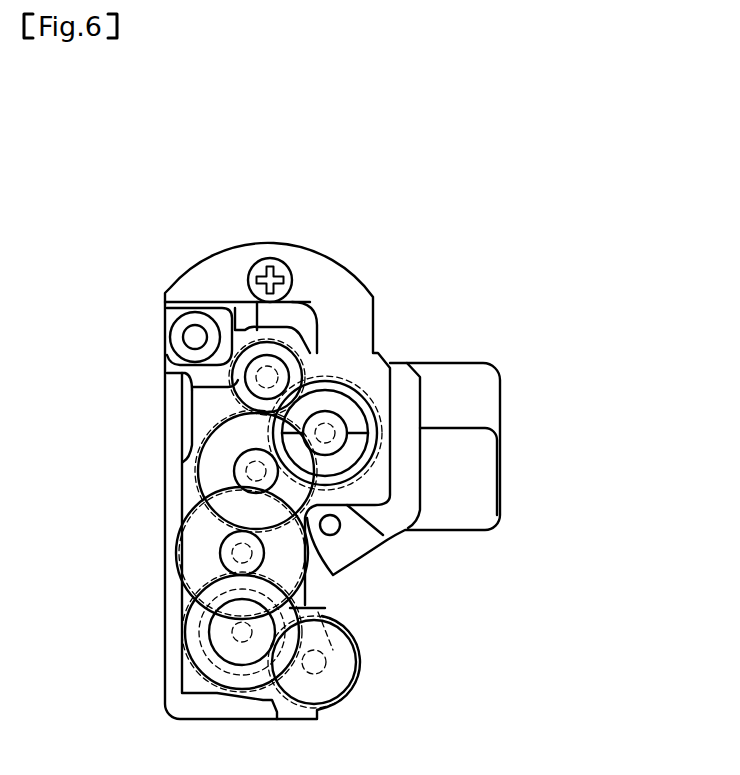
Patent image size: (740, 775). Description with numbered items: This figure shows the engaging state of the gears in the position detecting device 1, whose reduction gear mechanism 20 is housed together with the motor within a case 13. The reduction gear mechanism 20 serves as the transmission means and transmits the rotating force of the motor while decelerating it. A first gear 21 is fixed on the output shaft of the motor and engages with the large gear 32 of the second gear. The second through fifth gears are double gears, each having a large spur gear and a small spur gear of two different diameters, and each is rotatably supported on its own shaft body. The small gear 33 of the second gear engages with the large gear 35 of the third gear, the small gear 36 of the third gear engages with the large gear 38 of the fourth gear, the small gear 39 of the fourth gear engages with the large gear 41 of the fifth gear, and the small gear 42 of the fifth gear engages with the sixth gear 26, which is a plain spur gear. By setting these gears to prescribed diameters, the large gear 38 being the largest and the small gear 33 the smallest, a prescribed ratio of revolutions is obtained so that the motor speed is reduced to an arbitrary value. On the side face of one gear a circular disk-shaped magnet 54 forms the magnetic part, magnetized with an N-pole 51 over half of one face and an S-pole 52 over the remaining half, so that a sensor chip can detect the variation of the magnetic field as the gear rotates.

The position detecting device 1 is at (540, 293).
The case 13 is at (273, 247).
The reduction gear mechanism 20 is at (112, 353).
The first gear 21 is at (205, 401).
The sixth gear 26 is at (362, 680).
The large gear of the second gear 32 is at (335, 370).
The small gear of the second gear 33 is at (350, 392).
The large gear of the third gear 35 is at (205, 445).
The small gear of the third gear 36 is at (233, 472).
The large gear of the fourth gear 38 is at (220, 553).
The small gear of the fourth gear 39 is at (178, 565).
The large gear of the fifth gear 41 is at (187, 636).
The small gear of the fifth gear 42 is at (305, 600).
The N-pole 51 is at (345, 452).
The S-pole 52 is at (352, 425).
The magnet 54 is at (358, 412).